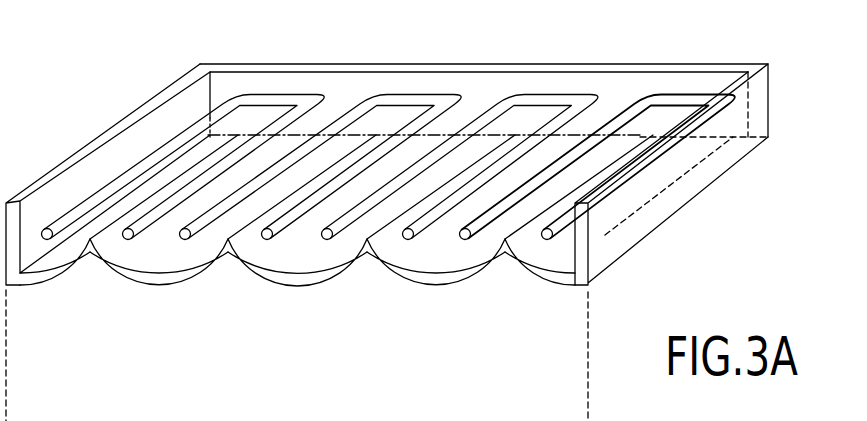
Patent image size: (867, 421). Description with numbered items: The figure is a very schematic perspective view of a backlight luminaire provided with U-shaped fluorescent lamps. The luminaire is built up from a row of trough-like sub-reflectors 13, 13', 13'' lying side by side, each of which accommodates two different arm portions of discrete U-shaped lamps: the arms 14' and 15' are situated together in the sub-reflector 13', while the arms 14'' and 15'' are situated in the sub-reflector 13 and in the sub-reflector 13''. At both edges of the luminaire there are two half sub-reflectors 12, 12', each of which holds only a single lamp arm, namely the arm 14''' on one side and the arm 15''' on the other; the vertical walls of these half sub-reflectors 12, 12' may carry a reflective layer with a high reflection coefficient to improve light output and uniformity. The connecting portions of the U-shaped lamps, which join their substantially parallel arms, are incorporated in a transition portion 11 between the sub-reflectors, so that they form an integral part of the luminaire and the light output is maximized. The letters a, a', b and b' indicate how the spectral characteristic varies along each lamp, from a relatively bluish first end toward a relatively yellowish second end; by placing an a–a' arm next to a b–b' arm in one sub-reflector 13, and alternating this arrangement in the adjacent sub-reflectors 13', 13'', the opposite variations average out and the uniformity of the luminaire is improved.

The transition portion 11 is at (436, 114).
The half sub-reflector 12 is at (108, 242).
The half sub-reflector 12' is at (636, 242).
The sub-reflector 13 is at (164, 240).
The sub-reflector 13' is at (302, 240).
The sub-reflector 13'' is at (510, 240).
The arm of U-shaped fluorescent lamp 14' is at (460, 207).
The arm of U-shaped fluorescent lamp 14'' is at (266, 187).
The arm of U-shaped fluorescent lamp 14''' is at (183, 163).
The arm of U-shaped fluorescent lamp 15' is at (321, 209).
The arm of U-shaped fluorescent lamp 15'' is at (465, 239).
The arm of U-shaped fluorescent lamp 15''' is at (598, 180).